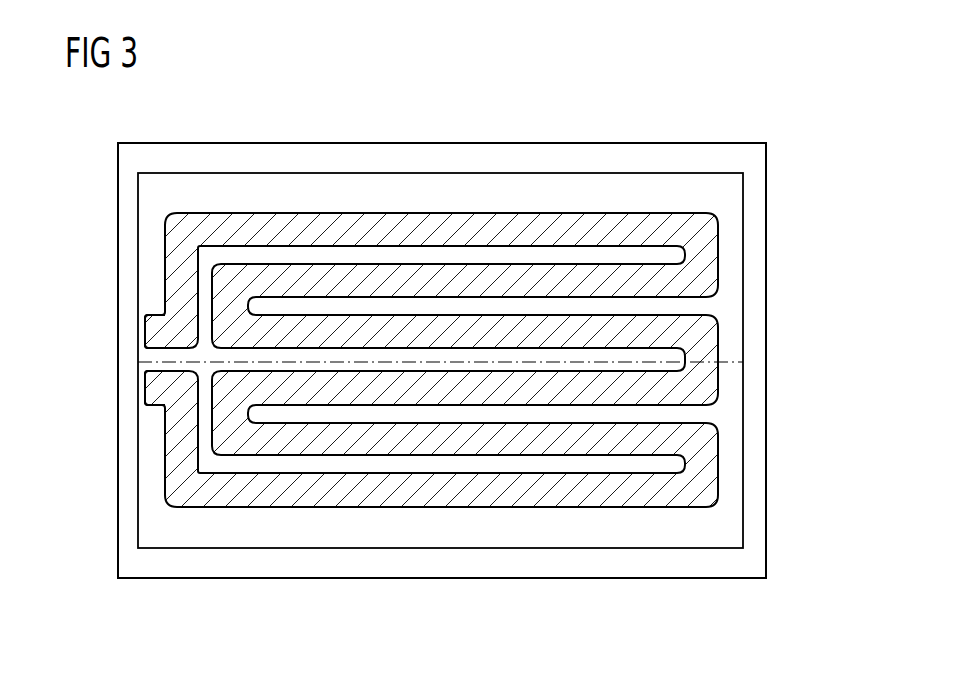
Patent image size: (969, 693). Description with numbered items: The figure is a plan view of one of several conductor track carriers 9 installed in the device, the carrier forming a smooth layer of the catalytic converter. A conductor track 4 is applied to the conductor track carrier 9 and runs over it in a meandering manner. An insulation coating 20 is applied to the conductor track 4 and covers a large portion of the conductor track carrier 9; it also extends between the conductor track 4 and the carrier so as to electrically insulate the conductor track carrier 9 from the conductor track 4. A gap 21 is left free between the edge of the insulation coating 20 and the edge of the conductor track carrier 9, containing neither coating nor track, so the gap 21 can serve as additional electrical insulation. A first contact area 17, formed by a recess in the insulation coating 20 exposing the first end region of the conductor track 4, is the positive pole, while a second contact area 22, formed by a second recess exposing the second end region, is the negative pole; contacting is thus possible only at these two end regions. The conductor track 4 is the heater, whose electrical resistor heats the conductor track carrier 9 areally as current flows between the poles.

The conductor track carrier 9 is at (673, 77).
The gap 21 is at (292, 160).
The insulation coating 20 is at (576, 535).
The conductor track 4 is at (426, 490).
The first contact area 17 is at (145, 313).
The second contact area 22 is at (145, 407).